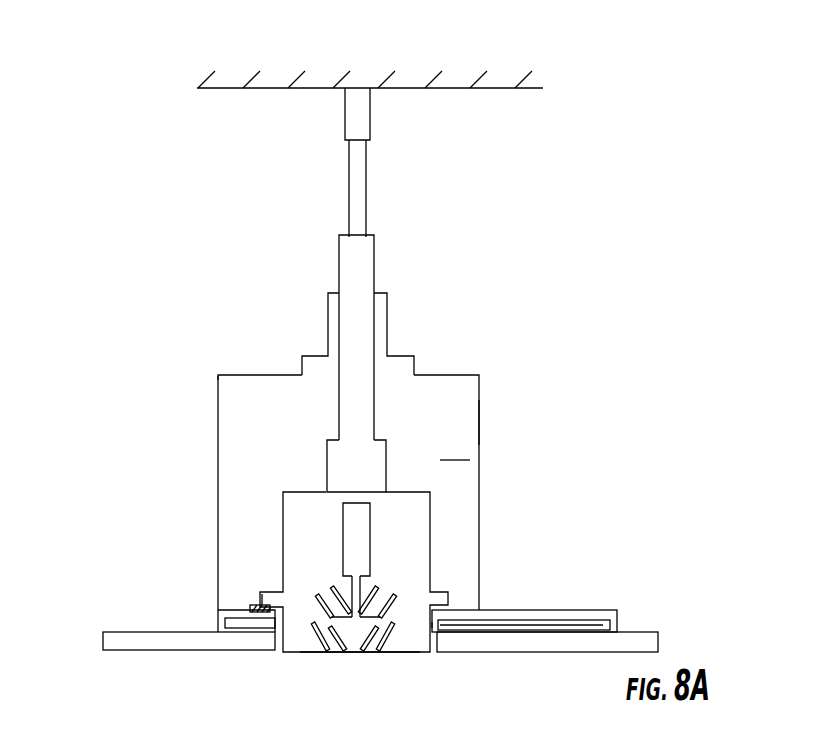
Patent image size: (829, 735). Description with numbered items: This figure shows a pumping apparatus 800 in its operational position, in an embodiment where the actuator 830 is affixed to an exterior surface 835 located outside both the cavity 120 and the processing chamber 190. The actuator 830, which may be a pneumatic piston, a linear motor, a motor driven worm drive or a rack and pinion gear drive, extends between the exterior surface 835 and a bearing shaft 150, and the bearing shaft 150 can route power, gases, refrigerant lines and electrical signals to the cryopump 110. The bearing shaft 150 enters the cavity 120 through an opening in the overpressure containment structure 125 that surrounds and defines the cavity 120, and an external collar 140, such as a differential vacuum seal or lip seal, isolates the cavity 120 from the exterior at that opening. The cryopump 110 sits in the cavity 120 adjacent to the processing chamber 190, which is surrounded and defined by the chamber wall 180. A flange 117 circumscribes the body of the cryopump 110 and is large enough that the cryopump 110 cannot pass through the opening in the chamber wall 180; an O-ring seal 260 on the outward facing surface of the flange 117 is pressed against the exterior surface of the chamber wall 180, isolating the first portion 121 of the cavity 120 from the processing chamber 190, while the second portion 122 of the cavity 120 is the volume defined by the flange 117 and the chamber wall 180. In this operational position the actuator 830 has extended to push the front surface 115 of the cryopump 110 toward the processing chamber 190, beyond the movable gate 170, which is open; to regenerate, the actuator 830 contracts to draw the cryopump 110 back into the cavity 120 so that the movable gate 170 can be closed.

The pumping apparatus 800 is at (196, 400).
The exterior surface 835 is at (510, 90).
The actuator 830 is at (368, 185).
The external collar 140 is at (387, 326).
The bearing shaft 150 is at (334, 393).
The cavity 120 is at (455, 409).
The overpressure containment structure 125 is at (481, 422).
The first portion of the cavity 121 is at (456, 478).
The cryopump 110 is at (277, 501).
The flange 117 is at (270, 590).
The O-ring seal 260 is at (250, 608).
The second portion of the cavity 122 is at (433, 622).
The front surface 115 is at (338, 653).
The processing chamber 190 is at (415, 682).
The chamber wall 180 is at (247, 653).
The movable gate 170 is at (504, 612).